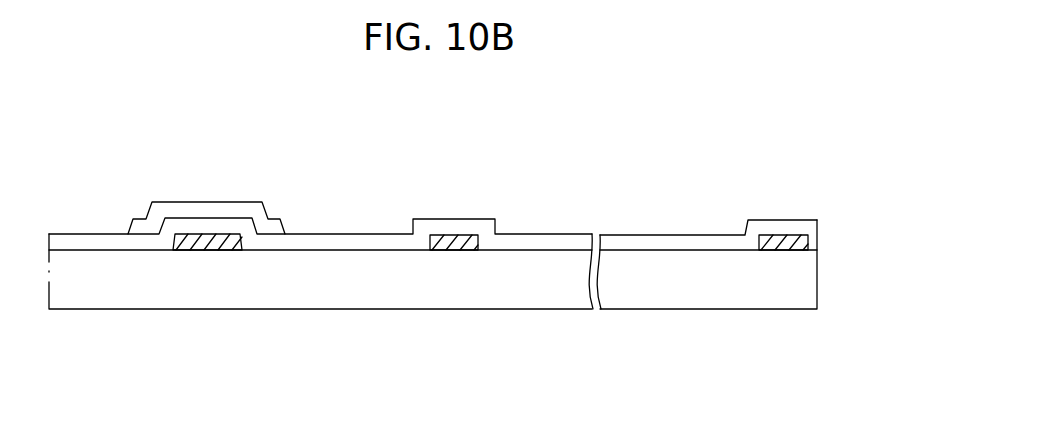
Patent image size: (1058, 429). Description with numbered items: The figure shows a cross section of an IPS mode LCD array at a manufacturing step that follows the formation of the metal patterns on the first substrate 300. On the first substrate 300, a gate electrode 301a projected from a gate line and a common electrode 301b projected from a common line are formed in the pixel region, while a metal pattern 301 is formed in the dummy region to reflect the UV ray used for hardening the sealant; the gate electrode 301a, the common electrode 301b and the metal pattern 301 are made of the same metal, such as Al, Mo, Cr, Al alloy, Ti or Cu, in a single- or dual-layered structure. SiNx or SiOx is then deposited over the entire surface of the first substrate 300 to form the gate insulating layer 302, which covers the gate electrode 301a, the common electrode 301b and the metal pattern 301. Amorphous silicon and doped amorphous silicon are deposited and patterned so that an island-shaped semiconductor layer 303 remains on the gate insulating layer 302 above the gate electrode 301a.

The first substrate 300 is at (810, 288).
The metal pattern 301 is at (782, 242).
The gate electrode 301a is at (222, 240).
The common electrode 301b is at (455, 243).
The gate insulating layer 302 is at (353, 242).
The semiconductor layer 303 is at (163, 208).